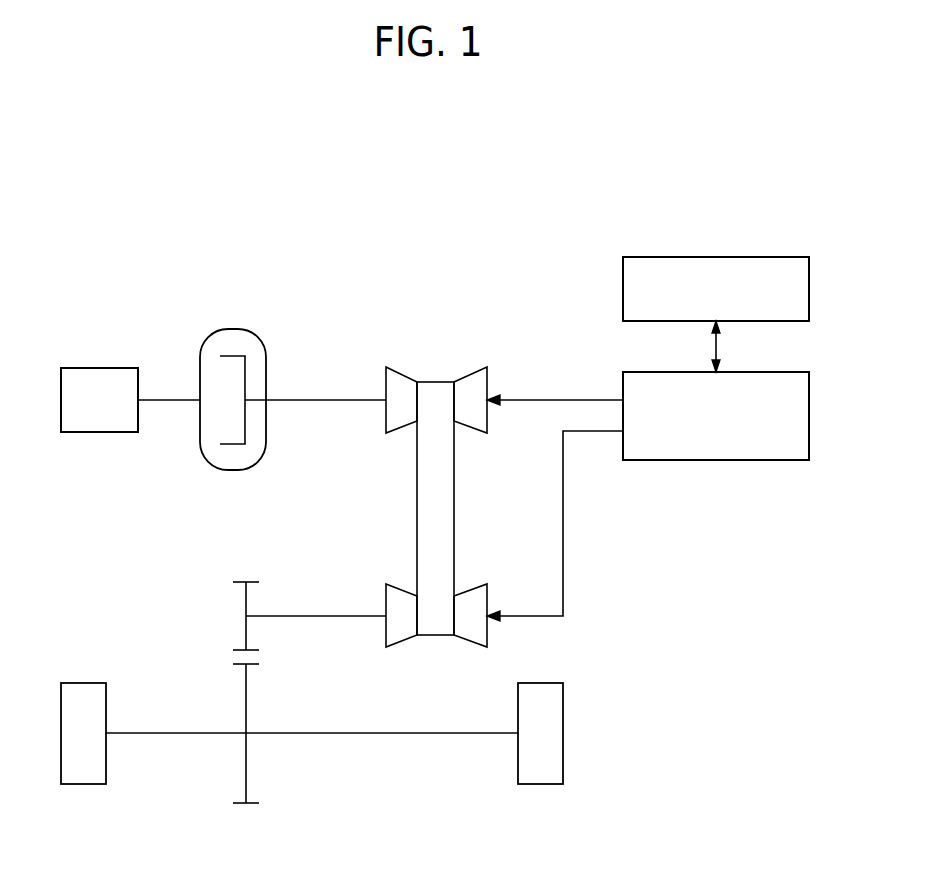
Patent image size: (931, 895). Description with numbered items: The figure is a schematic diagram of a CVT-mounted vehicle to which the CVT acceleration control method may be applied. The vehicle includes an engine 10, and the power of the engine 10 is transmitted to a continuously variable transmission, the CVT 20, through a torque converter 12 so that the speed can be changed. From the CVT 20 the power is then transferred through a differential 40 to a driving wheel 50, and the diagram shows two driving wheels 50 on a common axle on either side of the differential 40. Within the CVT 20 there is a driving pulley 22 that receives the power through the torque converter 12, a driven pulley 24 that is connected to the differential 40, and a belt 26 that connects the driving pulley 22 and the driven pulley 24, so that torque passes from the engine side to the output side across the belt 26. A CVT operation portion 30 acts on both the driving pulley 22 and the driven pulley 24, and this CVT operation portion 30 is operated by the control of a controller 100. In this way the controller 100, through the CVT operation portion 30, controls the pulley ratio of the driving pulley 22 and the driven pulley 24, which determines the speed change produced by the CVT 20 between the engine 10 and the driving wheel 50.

The engine 10 is at (98, 432).
The torque converter 12 is at (233, 329).
The CVT 20 is at (471, 465).
The driving pulley 22 is at (488, 382).
The driven pulley 24 is at (487, 632).
The belt 26 is at (454, 515).
The CVT operation portion 30 is at (717, 460).
The differential 40 is at (246, 767).
The driving wheel 50 is at (82, 784).
The controller 100 is at (715, 257).